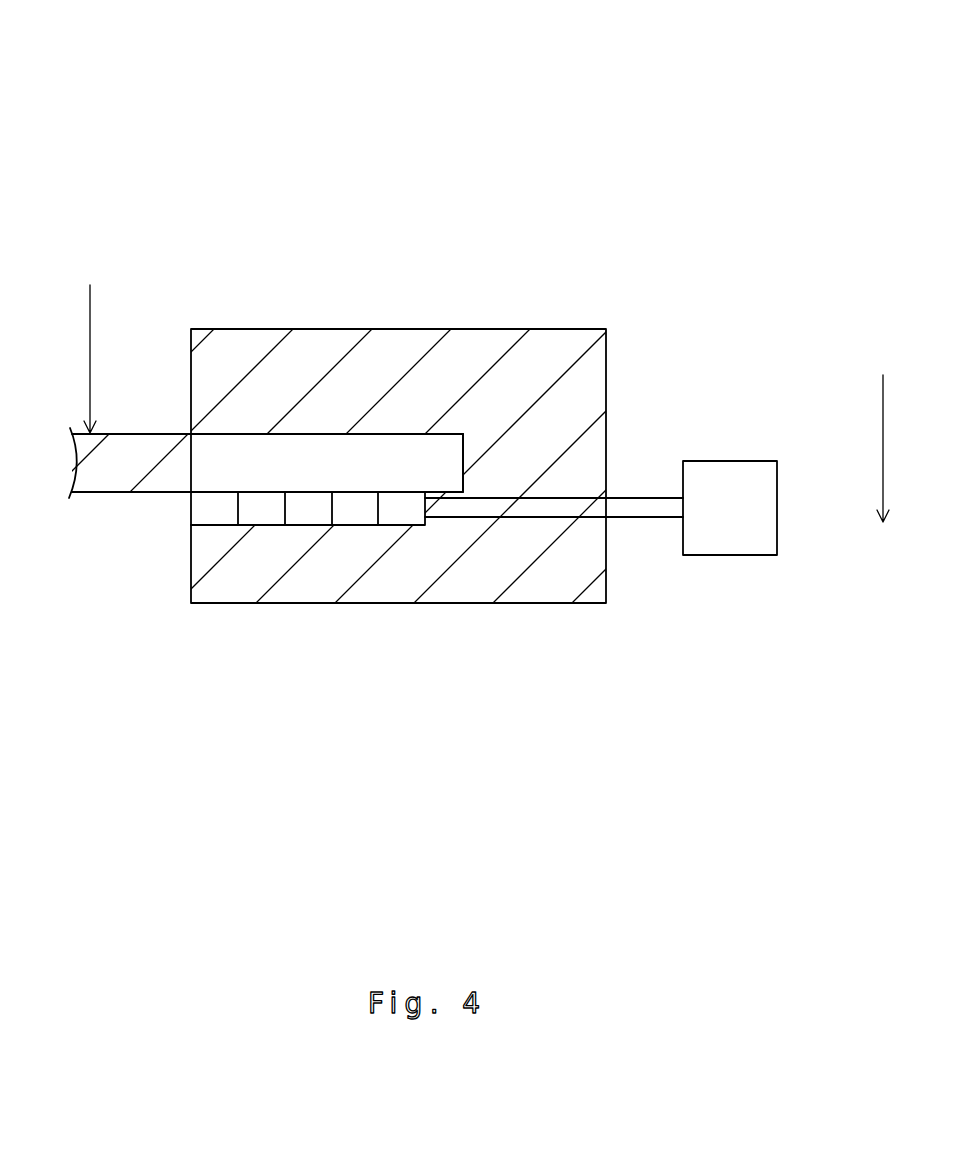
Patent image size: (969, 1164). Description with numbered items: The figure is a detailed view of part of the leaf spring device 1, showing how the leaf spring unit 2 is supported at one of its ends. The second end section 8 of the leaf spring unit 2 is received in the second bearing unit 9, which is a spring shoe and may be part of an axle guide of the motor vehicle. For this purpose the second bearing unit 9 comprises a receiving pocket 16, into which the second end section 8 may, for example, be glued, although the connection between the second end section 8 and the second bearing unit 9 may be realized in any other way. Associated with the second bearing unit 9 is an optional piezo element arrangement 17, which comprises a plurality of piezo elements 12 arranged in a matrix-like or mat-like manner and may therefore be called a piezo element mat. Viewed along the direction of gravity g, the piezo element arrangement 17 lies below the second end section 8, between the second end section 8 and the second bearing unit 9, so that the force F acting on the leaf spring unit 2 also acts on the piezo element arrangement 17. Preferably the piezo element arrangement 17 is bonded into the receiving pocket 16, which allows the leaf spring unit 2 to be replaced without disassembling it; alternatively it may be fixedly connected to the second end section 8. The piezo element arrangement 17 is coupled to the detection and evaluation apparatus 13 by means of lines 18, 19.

The leaf spring device 1 is at (324, 85).
The leaf spring unit 2 is at (90, 492).
The second end section 8 is at (413, 450).
The second bearing unit 9 is at (607, 365).
The piezo element 12 is at (209, 512).
The detection and evaluation apparatus 13 is at (712, 524).
The receiving pocket 16 is at (330, 434).
The piezo element arrangement 17 is at (463, 695).
The line 18 is at (623, 498).
The line 19 is at (670, 517).